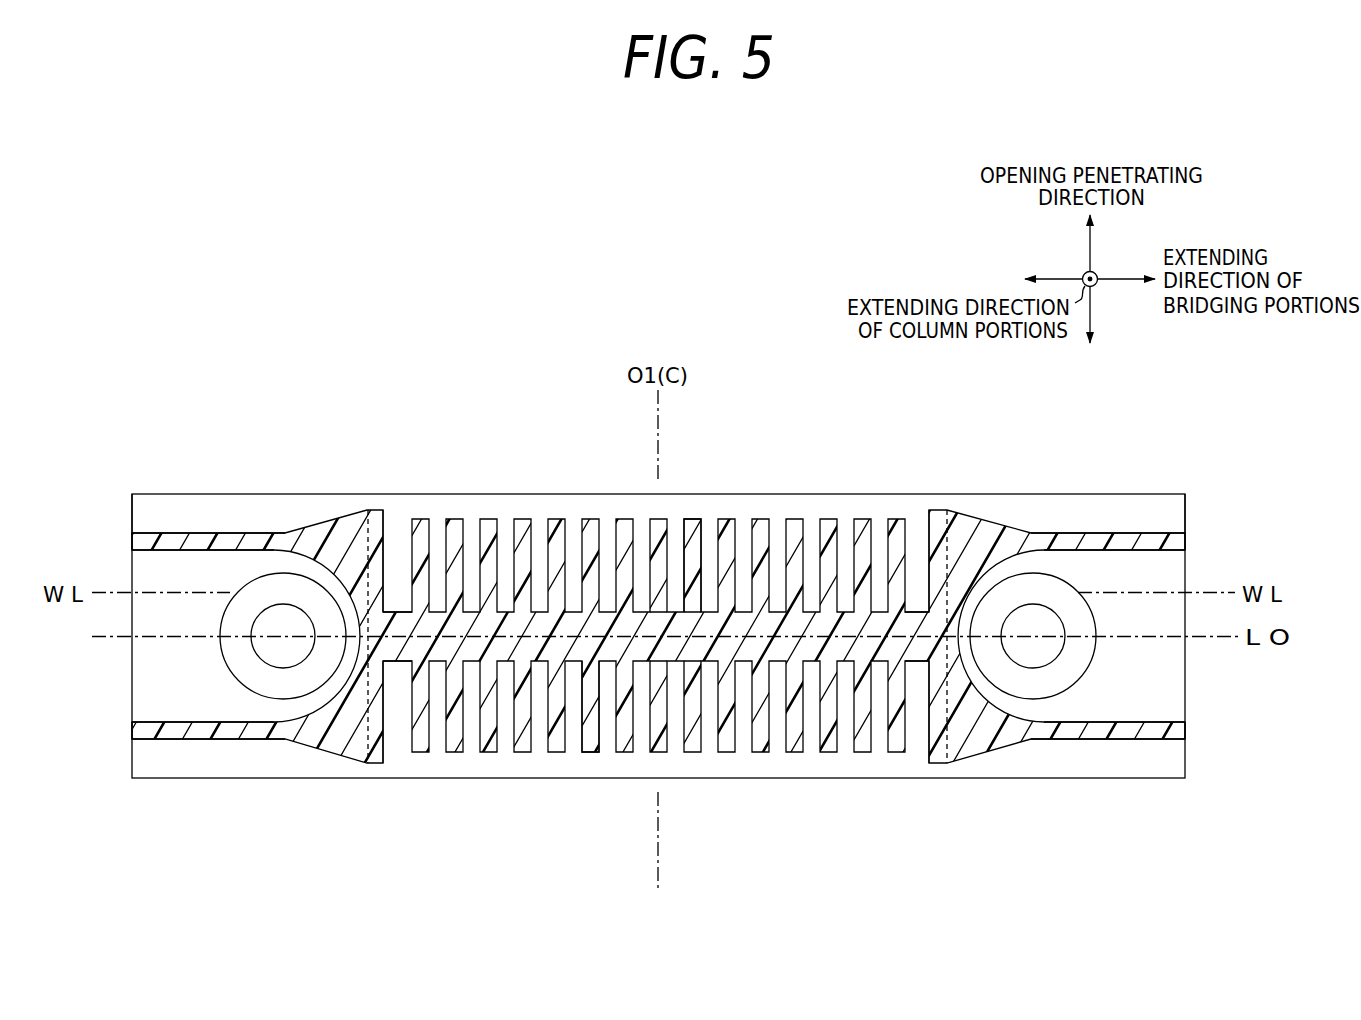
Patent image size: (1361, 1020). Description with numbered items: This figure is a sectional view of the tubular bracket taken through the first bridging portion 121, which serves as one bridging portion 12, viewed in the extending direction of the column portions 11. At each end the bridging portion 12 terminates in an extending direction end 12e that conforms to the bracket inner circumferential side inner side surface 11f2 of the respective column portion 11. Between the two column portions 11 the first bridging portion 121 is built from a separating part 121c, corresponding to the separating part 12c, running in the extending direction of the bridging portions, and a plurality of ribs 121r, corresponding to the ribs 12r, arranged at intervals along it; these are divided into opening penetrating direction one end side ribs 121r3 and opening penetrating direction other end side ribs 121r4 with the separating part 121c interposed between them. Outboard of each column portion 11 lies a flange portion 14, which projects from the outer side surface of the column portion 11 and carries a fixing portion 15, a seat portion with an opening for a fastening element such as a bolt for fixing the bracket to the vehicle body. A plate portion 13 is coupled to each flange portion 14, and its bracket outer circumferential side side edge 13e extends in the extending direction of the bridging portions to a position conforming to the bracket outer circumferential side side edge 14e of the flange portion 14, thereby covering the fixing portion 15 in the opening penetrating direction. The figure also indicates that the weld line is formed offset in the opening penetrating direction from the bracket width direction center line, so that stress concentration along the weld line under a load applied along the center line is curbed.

The column portion 11 is at (352, 764).
The bracket inner circumferential side inner side surface 11f2 is at (689, 638).
The bridging portion 12 is at (658, 634).
The first bridging portion 121 is at (807, 511).
The extending direction end 12e is at (931, 512).
The rib 12r is at (657, 648).
The rib of first bridging portion 121r is at (657, 648).
The opening penetrating direction one end side rib 121r3 is at (745, 453).
The opening penetrating direction other end side rib 121r4 is at (590, 742).
The separating part 12c is at (656, 729).
The separating part of first bridging portion 121c is at (684, 648).
The plate portion 13 is at (231, 530).
The bracket outer circumferential side side edge 13e is at (132, 541).
The flange portion 14 is at (263, 762).
The bracket outer circumferential side side edge of flange portion 14e is at (132, 510).
The fixing portion 15 is at (227, 655).